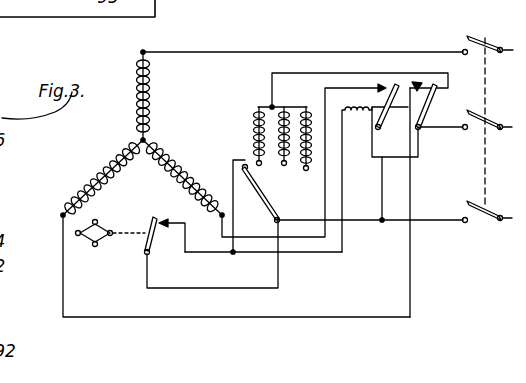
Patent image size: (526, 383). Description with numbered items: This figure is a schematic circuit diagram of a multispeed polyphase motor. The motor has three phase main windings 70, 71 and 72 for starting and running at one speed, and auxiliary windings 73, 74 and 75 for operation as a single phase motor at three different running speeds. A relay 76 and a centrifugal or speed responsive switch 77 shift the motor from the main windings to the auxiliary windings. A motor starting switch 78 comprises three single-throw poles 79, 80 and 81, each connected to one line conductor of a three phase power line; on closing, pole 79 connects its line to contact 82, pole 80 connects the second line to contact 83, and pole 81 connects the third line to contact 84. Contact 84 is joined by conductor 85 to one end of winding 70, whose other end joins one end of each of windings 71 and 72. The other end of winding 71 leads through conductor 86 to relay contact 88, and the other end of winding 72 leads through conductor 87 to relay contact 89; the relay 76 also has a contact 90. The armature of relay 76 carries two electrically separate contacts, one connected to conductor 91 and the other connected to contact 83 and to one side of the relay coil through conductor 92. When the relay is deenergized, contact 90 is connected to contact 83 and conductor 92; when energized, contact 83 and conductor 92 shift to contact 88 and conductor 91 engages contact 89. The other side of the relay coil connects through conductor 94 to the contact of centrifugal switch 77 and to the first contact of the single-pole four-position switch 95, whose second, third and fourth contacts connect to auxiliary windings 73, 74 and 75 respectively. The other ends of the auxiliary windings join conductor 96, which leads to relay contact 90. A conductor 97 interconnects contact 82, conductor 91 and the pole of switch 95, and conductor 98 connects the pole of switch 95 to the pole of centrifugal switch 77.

The main winding 70 is at (151, 98).
The main winding 71 is at (100, 173).
The main winding 72 is at (180, 164).
The auxiliary winding 73 is at (254, 126).
The auxiliary winding 74 is at (287, 110).
The auxiliary winding 75 is at (313, 123).
The relay 76 is at (355, 122).
The centrifugal switch 77 is at (128, 244).
The motor starting switch 78 is at (481, 156).
The pole 79 is at (490, 228).
The pole 80 is at (470, 110).
The pole 81 is at (493, 36).
The contact 82 is at (463, 222).
The contact 83 is at (465, 129).
The contact 84 is at (462, 50).
The conductor 85 is at (331, 52).
The conductor 86 is at (135, 318).
The conductor 87 is at (305, 238).
The relay contact 88 is at (417, 85).
The relay contact 89 is at (379, 86).
The relay contact 90 is at (437, 87).
The conductor 91 is at (381, 195).
The conductor 92 is at (420, 158).
The conductor 94 is at (342, 252).
The single-pole four-position switch 95 is at (266, 182).
The conductor 96 is at (269, 78).
The conductor 97 is at (401, 221).
The conductor 98 is at (210, 287).